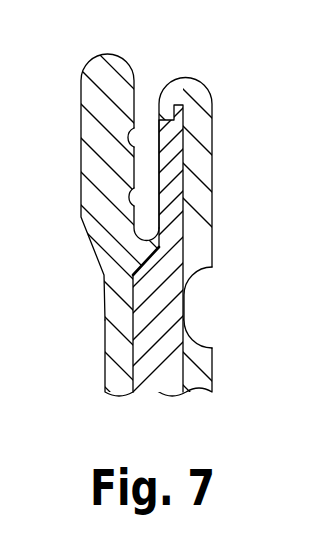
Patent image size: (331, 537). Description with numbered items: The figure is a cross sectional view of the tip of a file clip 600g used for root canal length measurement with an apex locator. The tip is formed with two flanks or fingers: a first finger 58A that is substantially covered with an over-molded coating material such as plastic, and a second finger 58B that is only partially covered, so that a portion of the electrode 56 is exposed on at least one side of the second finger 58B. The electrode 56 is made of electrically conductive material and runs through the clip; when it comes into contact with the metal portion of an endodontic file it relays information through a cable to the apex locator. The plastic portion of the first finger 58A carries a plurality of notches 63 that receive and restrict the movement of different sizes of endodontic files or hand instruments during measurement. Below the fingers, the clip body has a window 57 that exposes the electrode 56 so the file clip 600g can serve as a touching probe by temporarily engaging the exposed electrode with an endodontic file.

The file clip 600g is at (222, 63).
The first finger 58A is at (110, 56).
The second finger 58B is at (195, 148).
The notches 63 is at (131, 195).
The electrode 56 is at (176, 261).
The window 57 is at (185, 297).